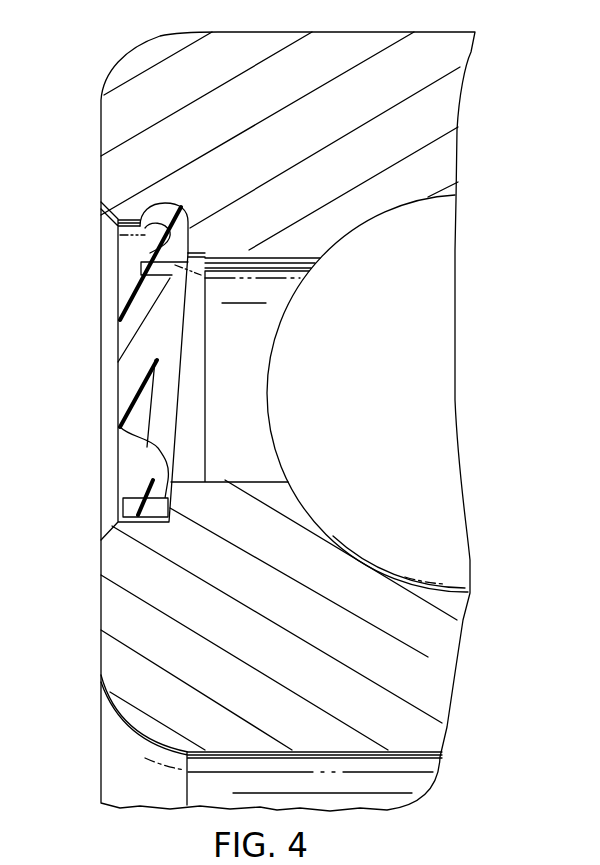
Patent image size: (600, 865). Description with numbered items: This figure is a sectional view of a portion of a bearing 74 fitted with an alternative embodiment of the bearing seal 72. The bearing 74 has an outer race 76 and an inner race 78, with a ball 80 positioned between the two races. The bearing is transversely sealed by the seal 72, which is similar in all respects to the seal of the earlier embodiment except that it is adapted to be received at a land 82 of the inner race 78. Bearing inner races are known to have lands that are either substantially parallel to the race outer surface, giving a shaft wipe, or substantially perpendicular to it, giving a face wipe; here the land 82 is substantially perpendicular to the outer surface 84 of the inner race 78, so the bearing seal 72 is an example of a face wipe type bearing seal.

The bearing seal 72 is at (96, 305).
The bearing 74 is at (488, 78).
The outer race 76 is at (276, 44).
The inner race 78 is at (428, 657).
The ball 80 is at (422, 311).
The land 82 is at (171, 497).
The outer surface 84 is at (263, 481).